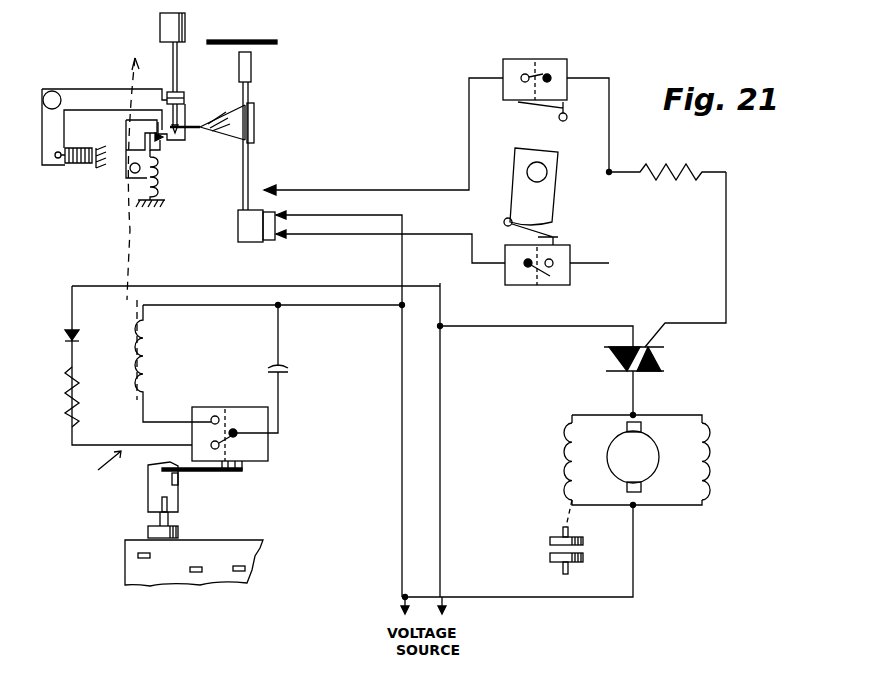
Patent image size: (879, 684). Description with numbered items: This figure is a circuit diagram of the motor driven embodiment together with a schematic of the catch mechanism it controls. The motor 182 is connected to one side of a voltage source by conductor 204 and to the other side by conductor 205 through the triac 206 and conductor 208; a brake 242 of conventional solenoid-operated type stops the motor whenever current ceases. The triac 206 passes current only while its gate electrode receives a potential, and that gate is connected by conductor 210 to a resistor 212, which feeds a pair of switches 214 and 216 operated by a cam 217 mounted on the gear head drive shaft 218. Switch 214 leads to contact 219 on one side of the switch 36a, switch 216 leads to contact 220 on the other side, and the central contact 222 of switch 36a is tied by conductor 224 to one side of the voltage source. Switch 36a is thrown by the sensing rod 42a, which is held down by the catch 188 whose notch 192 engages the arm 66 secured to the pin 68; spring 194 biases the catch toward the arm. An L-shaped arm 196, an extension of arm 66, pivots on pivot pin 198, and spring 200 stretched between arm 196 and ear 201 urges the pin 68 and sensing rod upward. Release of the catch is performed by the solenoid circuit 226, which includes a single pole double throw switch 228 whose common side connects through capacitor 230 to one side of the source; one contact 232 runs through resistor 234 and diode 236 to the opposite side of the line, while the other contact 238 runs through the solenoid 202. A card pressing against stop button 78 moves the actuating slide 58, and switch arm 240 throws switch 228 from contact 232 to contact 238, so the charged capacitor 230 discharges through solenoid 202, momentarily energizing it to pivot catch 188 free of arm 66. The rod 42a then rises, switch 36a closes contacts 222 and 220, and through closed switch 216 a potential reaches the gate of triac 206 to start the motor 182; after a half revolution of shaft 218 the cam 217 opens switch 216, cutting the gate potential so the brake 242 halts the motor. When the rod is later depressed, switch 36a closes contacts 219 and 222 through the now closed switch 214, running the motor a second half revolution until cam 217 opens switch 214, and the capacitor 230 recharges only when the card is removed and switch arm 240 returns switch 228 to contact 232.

The pin 68 is at (177, 76).
The arm 66 is at (180, 116).
The sensing rod 42a is at (250, 164).
The switch 36a is at (235, 243).
The L-shaped arm 196 is at (105, 95).
The pivot pin 198 is at (52, 91).
The spring 200 is at (82, 165).
The ear 201 is at (100, 170).
The catch 188 is at (120, 128).
The notch 192 is at (165, 142).
The spring 194 is at (158, 185).
The contact 220 is at (284, 174).
The central contact 222 is at (294, 203).
The conductor 224 is at (412, 220).
The contact 219 is at (284, 240).
The switch 216 is at (550, 58).
The cam 217 is at (540, 210).
The gear head drive shaft 218 is at (540, 172).
The switch 214 is at (520, 282).
The resistor 212 is at (692, 168).
The conductor 210 is at (728, 285).
The conductor 208 is at (497, 330).
The triac 206 is at (662, 358).
The conductor 205 is at (636, 395).
The motor 182 is at (655, 460).
The brake 242 is at (550, 531).
The conductor 204 is at (593, 600).
The solenoid circuit 226 is at (251, 385).
The diode 236 is at (76, 334).
The resistor 234 is at (78, 408).
The solenoid 202 is at (140, 365).
The capacitor 230 is at (282, 368).
The single pole double throw switch 228 is at (255, 450).
The contact 238 is at (212, 414).
The contact 232 is at (210, 445).
The switch arm 240 is at (196, 472).
The actuating slide 58 is at (148, 496).
The stop button 78 is at (147, 531).